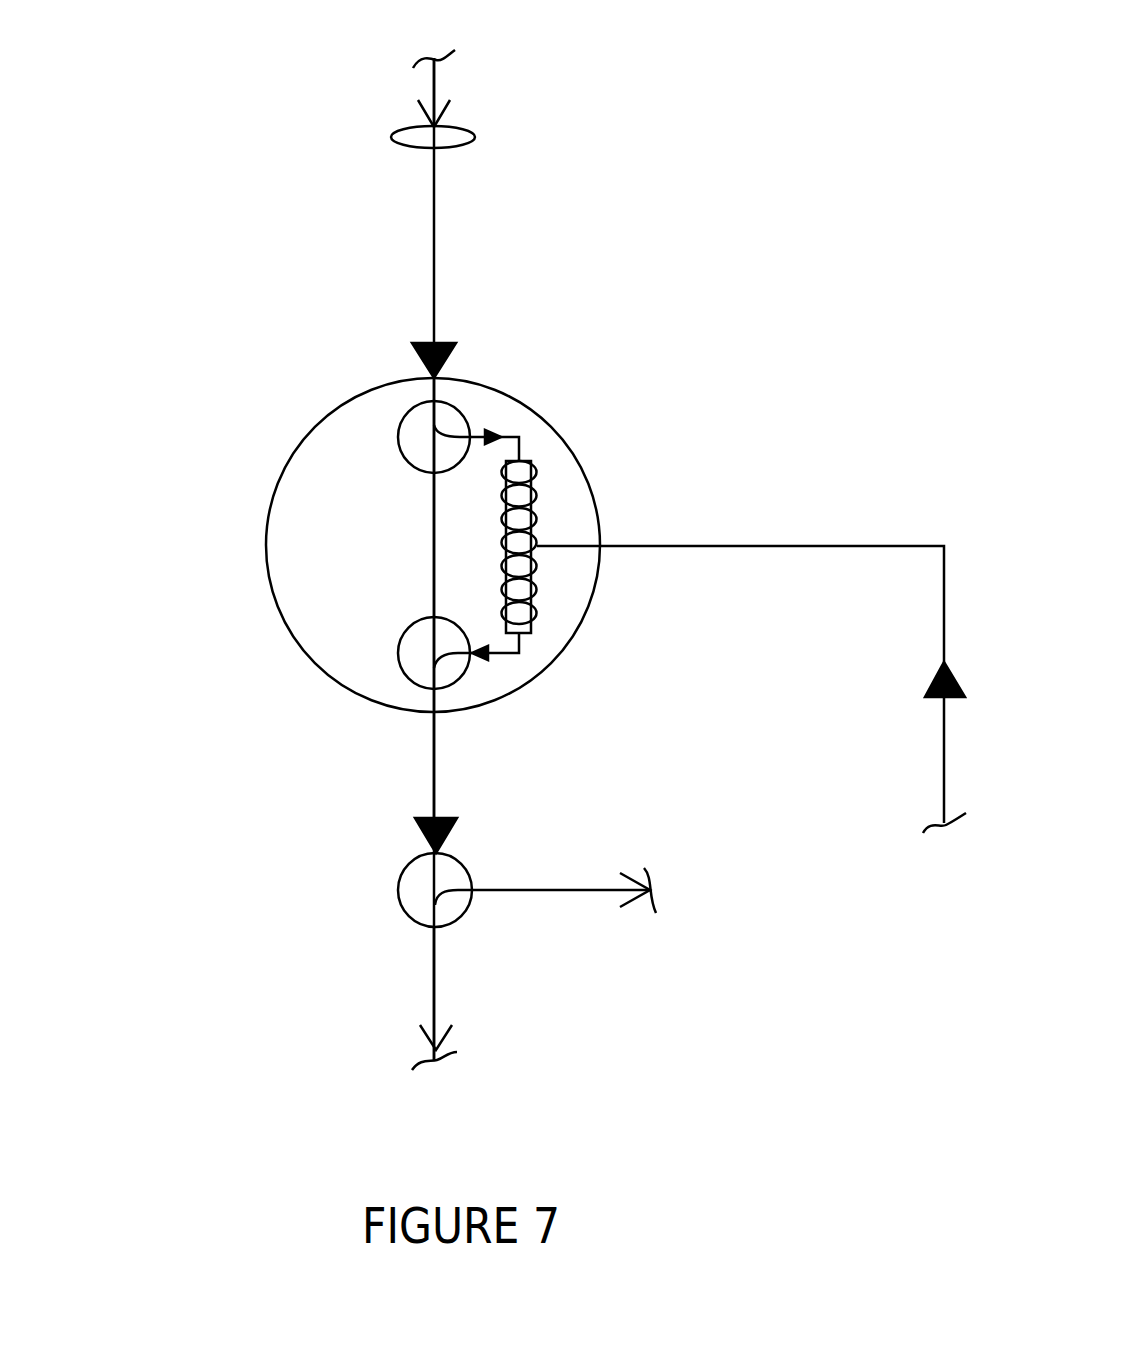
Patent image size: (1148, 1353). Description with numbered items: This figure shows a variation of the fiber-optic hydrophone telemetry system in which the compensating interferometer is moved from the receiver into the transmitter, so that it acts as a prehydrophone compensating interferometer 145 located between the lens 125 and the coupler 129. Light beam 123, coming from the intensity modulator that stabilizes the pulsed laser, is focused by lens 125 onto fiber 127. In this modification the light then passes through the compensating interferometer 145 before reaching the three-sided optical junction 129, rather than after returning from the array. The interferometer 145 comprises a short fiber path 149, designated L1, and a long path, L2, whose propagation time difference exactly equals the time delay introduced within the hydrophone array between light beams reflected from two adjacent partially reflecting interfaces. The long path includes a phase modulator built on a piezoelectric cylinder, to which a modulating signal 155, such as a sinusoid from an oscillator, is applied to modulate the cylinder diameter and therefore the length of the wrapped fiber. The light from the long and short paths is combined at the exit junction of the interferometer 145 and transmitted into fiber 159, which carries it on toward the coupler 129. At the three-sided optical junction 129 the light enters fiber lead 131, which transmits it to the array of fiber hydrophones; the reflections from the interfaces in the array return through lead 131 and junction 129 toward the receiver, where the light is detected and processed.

The light beam 123 is at (435, 83).
The lens 125 is at (462, 145).
The fiber 127 is at (440, 372).
The compensating interferometer 145 is at (520, 402).
The short fiber path 149 is at (433, 548).
The modulating signal 155 is at (944, 607).
The fiber 159 is at (437, 767).
The three-sided optical junction 129 is at (398, 890).
The fiber lead 131 is at (436, 993).